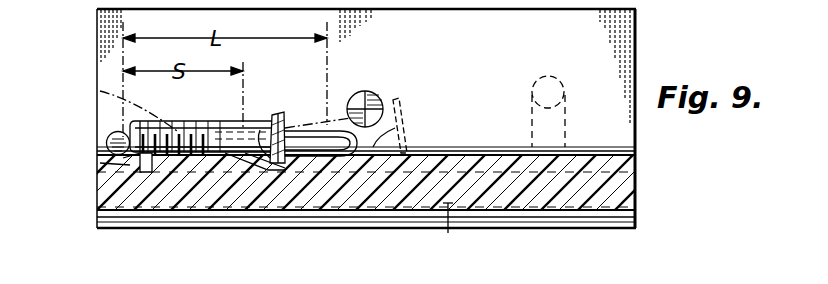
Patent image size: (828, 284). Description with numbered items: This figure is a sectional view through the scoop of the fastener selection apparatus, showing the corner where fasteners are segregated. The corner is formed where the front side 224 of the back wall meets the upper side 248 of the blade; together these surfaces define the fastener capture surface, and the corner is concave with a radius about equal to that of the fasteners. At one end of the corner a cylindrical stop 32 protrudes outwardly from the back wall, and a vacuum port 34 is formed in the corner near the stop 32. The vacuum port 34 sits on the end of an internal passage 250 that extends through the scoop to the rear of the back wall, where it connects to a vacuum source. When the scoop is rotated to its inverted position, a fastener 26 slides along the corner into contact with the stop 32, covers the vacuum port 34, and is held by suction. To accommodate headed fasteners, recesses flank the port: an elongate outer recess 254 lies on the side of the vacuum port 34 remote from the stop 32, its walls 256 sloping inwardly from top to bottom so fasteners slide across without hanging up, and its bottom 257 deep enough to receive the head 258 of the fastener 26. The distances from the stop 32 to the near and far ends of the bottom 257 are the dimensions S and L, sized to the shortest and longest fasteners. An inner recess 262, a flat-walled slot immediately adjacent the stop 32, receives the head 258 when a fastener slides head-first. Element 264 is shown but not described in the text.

The fastener 26 is at (215, 113).
The stop 32 is at (113, 135).
The vacuum port 34 is at (100, 91).
The front side of the back wall 224 is at (496, 45).
The upper side of the blade 248 is at (622, 148).
The internal passage 250 is at (567, 110).
The outer recess 254 is at (303, 146).
The walls of the outer recess 256 is at (380, 141).
The bottom of the outer recess 257 is at (290, 162).
The head 258 is at (277, 120).
The inner recess 262 is at (140, 158).
The mounting surface 264 is at (100, 163).